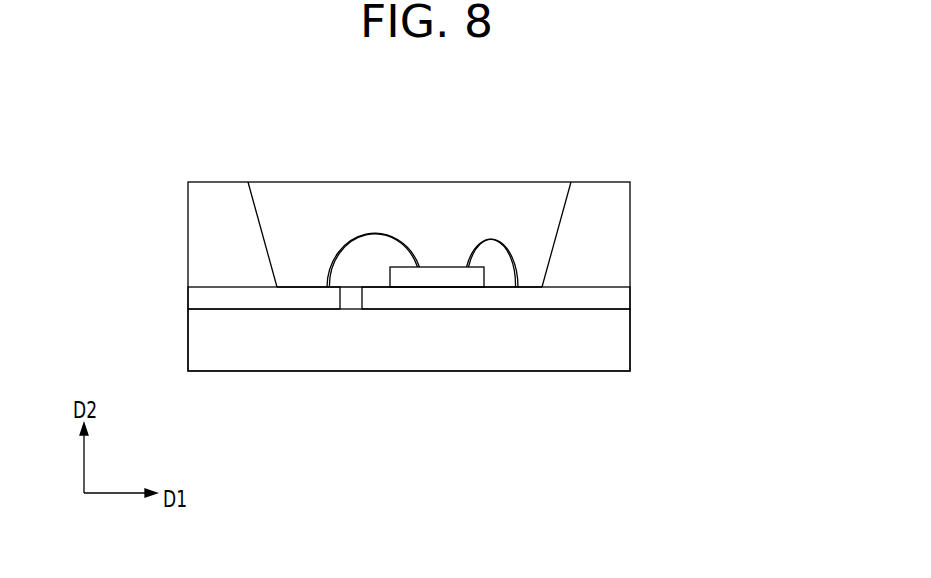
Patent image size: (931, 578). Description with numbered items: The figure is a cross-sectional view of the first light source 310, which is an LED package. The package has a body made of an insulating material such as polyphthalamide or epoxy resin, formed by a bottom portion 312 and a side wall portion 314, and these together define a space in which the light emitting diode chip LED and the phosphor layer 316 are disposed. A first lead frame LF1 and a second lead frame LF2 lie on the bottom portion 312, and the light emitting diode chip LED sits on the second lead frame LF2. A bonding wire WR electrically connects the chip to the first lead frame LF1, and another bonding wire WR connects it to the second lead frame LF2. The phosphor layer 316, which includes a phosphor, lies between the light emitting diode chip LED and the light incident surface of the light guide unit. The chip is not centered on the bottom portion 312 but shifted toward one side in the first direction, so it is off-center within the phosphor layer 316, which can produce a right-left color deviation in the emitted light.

The first light source 310 is at (220, 182).
The side wall portion 314 is at (195, 228).
The phosphor layer 316 is at (317, 193).
The bottom portion 312 is at (195, 340).
The first lead frame LF1 is at (195, 296).
The second lead frame LF2 is at (623, 300).
The light emitting diode chip LED is at (438, 275).
The bonding wire WR is at (371, 231).